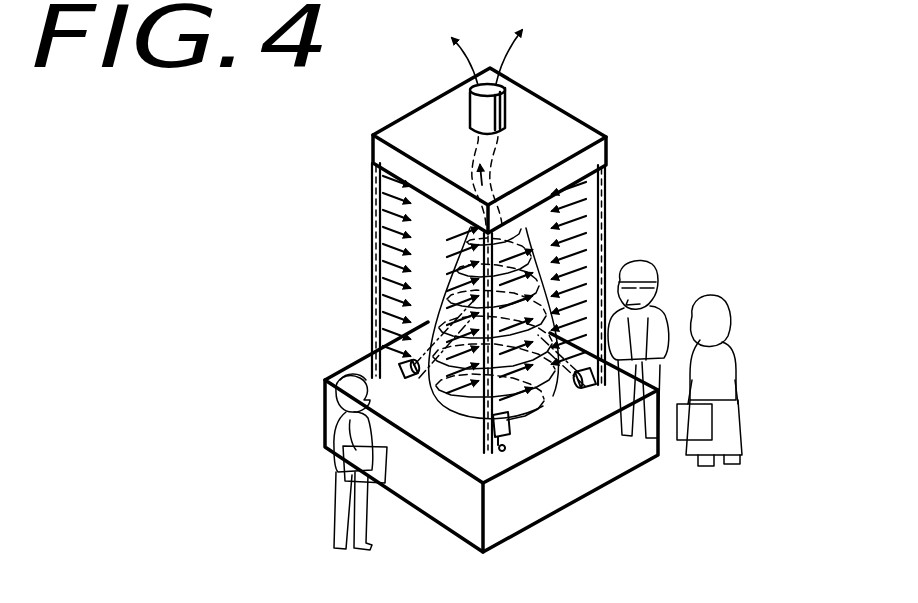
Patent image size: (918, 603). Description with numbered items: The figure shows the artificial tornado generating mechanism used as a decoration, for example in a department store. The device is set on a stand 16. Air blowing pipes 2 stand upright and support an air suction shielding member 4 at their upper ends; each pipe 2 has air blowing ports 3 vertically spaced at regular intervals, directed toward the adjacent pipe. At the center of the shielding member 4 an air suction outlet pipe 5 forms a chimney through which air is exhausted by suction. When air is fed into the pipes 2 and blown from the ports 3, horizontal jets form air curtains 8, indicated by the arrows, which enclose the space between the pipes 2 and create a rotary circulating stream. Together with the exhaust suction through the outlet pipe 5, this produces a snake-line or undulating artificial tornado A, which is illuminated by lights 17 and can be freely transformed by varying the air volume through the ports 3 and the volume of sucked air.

The air blowing pipe 2 is at (373, 240).
The air blowing port 3 is at (372, 287).
The air suction shielding member 4 is at (598, 153).
The air suction outlet pipe 5 is at (507, 108).
The air curtain 8 is at (373, 328).
The stand 16 is at (630, 442).
The lights 17 is at (514, 432).
The artificial tornado A is at (440, 420).